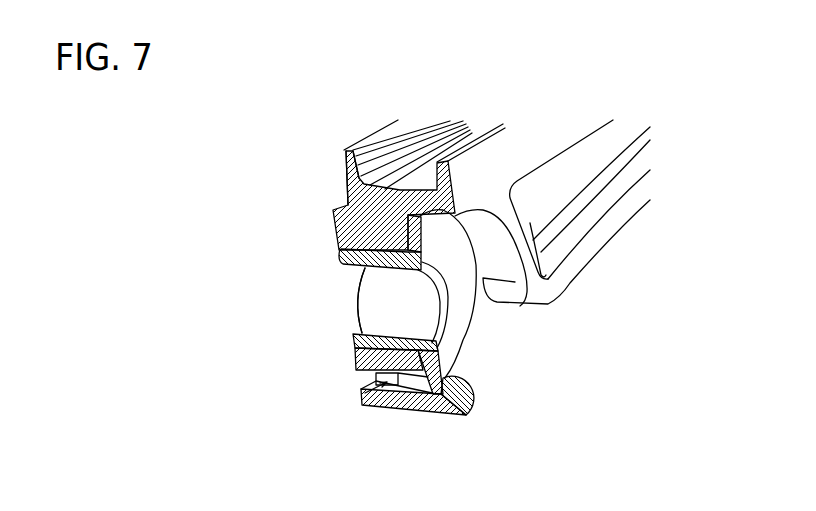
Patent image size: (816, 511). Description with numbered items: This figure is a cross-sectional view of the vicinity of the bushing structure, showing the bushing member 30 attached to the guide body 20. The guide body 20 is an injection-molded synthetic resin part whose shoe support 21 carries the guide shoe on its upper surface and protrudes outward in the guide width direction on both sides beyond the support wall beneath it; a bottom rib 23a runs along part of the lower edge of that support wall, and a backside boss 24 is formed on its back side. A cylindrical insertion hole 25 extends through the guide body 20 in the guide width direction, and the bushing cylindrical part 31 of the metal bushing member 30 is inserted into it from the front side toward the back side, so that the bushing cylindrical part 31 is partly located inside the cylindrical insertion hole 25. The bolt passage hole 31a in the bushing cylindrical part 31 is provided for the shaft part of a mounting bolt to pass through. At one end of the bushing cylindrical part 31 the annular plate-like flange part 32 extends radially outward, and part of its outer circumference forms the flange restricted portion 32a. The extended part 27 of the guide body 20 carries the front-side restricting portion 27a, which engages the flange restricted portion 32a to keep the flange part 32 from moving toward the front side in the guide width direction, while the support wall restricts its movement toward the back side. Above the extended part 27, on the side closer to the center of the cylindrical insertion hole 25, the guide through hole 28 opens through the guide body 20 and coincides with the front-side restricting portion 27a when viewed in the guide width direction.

The guide body 20 is at (513, 142).
The shoe support 21 is at (400, 189).
The bottom rib 23a is at (605, 228).
The backside boss 24 is at (362, 230).
The cylindrical insertion hole 25 is at (358, 367).
The extended part 27 is at (402, 412).
The front-side restricting portion 27a is at (468, 415).
The guide through hole 28 is at (368, 403).
The bushing member 30 is at (330, 250).
The bushing cylindrical part 31 is at (352, 340).
The bolt passage hole 31a is at (376, 302).
The flange part 32 is at (460, 328).
The flange restricted portion 32a is at (442, 398).